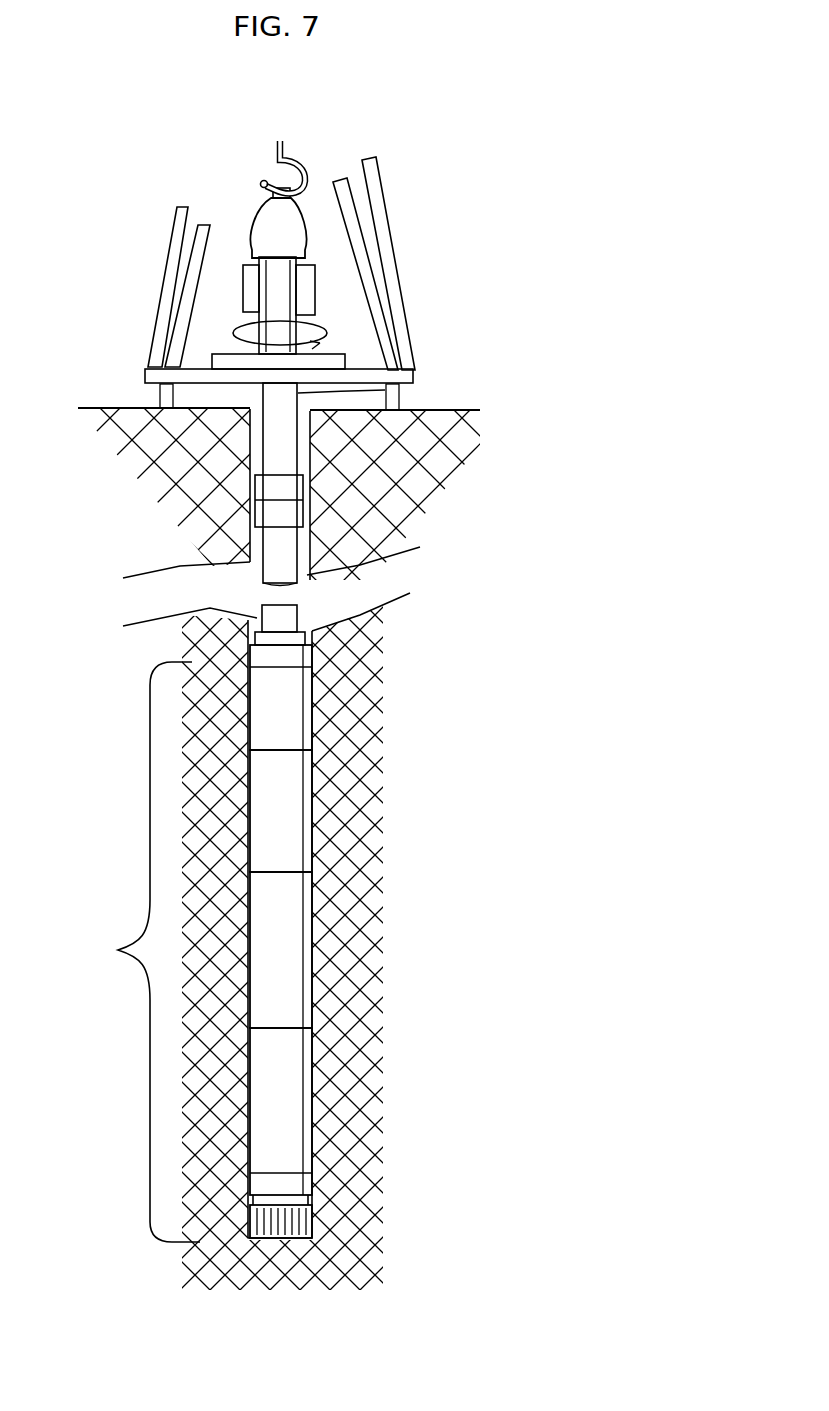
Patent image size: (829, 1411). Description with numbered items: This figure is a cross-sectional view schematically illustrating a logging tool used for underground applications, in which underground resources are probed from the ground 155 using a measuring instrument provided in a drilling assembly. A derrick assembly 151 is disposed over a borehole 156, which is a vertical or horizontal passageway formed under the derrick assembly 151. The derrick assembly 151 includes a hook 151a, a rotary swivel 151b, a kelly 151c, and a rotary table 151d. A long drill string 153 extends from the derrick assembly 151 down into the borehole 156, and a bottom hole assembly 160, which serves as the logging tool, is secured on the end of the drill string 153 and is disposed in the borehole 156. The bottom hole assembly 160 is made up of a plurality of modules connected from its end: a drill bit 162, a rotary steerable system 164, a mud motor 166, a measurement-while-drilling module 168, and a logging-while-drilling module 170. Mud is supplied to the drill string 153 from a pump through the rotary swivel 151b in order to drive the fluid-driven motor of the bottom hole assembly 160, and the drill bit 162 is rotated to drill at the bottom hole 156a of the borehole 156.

The derrick assembly 151 is at (421, 284).
The hook 151a is at (277, 154).
The rotary swivel 151b is at (257, 210).
The kelly 151c is at (272, 308).
The rotary table 151d is at (215, 362).
The drill string 153 is at (413, 376).
The ground 155 is at (437, 406).
The borehole 156 is at (313, 434).
The bottom hole 156a is at (283, 1240).
The bottom hole assembly 160 is at (187, 923).
The drill bit 162 is at (310, 1217).
The rotary steerable system 164 is at (285, 1082).
The mud motor 166 is at (292, 944).
The measurement-while-drilling module 168 is at (287, 803).
The logging-while-drilling module 170 is at (290, 705).